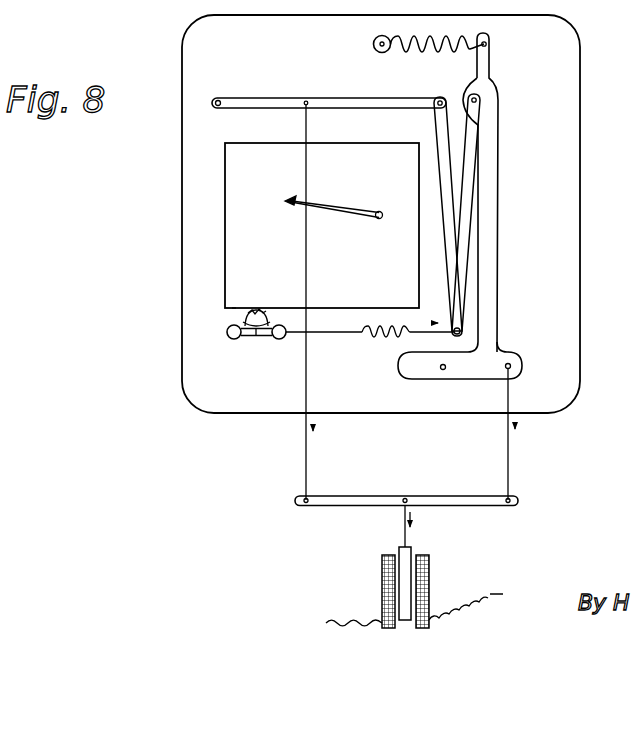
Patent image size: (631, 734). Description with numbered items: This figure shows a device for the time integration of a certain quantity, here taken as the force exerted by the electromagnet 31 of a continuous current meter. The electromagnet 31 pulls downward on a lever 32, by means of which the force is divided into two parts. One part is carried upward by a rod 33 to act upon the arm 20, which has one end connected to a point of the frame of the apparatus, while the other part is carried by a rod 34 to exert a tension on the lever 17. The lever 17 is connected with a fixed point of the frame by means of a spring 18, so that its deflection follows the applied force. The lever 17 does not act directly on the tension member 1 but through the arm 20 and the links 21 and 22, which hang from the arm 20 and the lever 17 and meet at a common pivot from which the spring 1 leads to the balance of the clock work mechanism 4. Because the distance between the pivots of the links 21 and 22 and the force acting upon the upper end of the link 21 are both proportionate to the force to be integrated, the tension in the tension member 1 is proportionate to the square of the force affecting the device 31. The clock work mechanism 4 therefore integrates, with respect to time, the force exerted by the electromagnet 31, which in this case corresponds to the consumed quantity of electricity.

The spring 1 is at (374, 338).
The clock work mechanism 4 is at (322, 225).
The lever 17 is at (497, 172).
The spring 18 is at (430, 38).
The arm 20 is at (262, 102).
The link 21 is at (437, 125).
The link 22 is at (458, 126).
The electromagnet 31 is at (426, 581).
The lever 32 is at (452, 496).
The rod 33 is at (304, 377).
The rod 34 is at (506, 435).